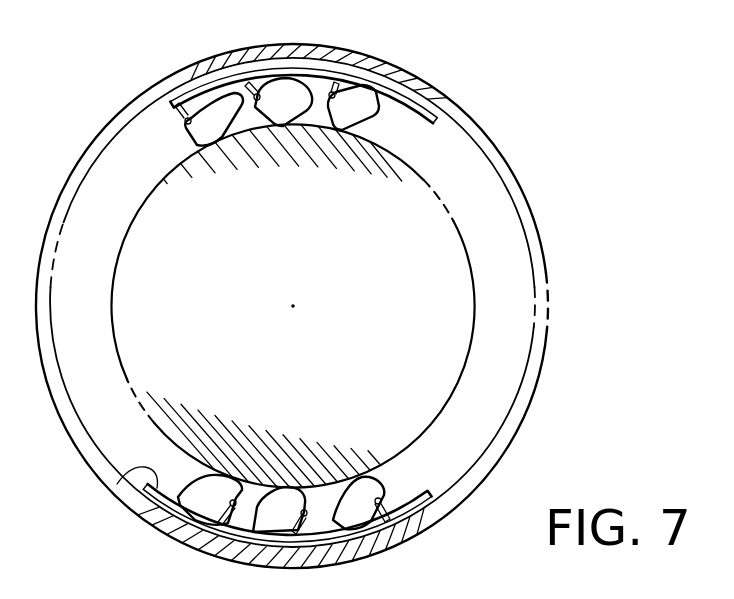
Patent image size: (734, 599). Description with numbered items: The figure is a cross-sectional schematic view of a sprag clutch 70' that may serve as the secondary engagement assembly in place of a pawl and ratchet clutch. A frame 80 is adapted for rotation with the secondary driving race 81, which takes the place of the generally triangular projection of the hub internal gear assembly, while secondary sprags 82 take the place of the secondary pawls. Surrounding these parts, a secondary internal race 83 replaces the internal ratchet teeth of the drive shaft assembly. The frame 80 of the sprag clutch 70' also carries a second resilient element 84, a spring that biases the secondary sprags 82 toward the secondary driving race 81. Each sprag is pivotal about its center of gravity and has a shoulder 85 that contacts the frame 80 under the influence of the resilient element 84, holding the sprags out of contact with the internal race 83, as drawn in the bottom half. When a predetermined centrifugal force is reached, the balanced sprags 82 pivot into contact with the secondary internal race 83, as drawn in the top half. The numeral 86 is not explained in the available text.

The sprag clutch 70' is at (561, 102).
The frame 80 is at (172, 107).
The secondary driving race 81 is at (410, 178).
The secondary sprags 82 is at (348, 132).
The secondary internal race 83 is at (460, 132).
The second resilient element 84 is at (252, 94).
The shoulder 85 is at (362, 100).
The lining in ring 86 is at (410, 74).